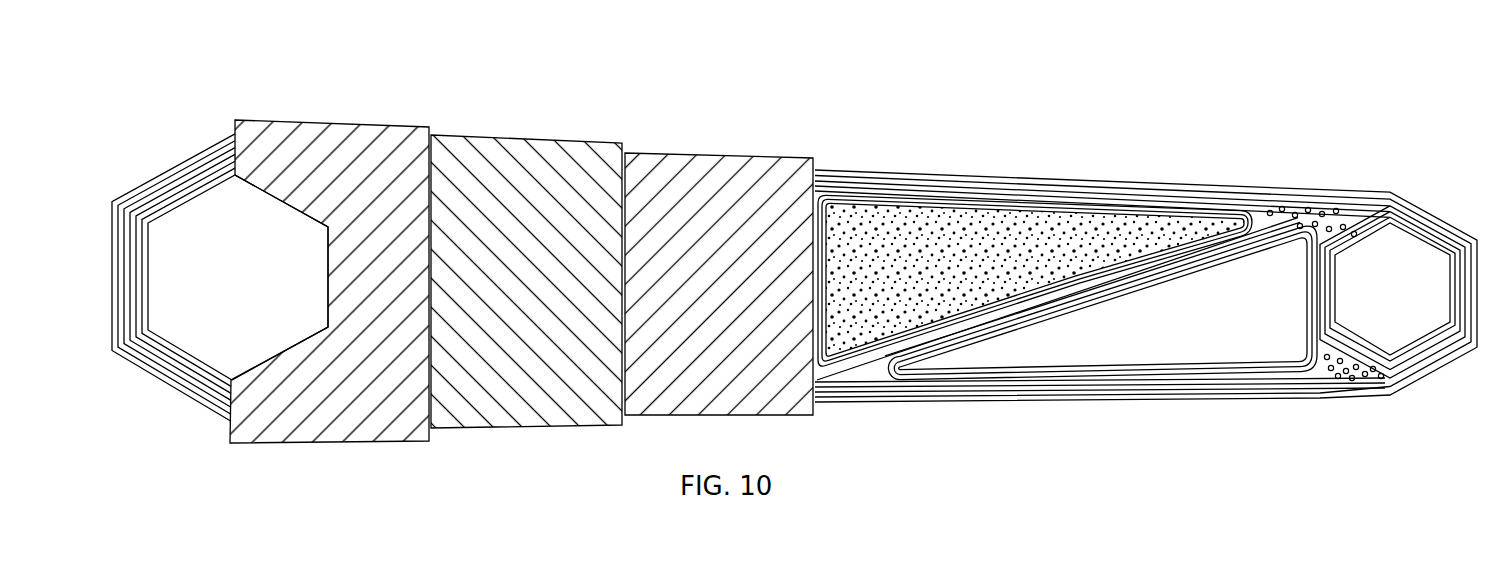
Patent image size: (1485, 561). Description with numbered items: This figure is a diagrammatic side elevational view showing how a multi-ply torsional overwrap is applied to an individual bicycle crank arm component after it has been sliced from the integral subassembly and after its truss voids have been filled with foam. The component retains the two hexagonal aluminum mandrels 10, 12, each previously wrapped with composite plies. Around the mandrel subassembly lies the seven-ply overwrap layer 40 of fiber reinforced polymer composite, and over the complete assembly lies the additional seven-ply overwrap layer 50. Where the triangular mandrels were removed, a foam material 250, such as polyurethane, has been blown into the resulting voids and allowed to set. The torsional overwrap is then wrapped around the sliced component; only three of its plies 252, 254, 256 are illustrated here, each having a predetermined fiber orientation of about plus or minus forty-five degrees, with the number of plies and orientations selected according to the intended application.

The mandrel 10 is at (213, 253).
The mandrel 12 is at (1380, 287).
The overwrap layer 40 is at (867, 373).
The overwrap layer 50 is at (895, 178).
The foam material 250 is at (987, 270).
The ply 252 is at (360, 182).
The ply 254 is at (532, 208).
The ply 256 is at (687, 223).